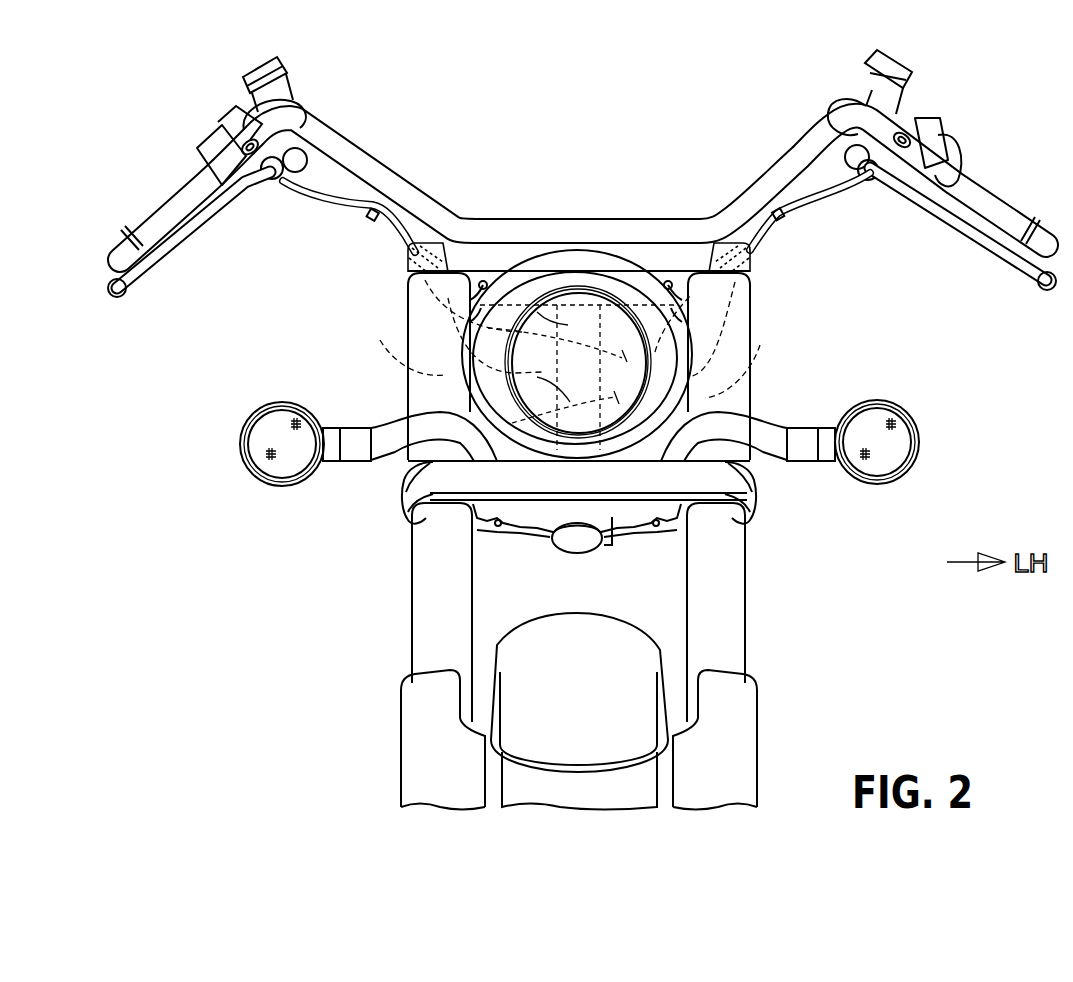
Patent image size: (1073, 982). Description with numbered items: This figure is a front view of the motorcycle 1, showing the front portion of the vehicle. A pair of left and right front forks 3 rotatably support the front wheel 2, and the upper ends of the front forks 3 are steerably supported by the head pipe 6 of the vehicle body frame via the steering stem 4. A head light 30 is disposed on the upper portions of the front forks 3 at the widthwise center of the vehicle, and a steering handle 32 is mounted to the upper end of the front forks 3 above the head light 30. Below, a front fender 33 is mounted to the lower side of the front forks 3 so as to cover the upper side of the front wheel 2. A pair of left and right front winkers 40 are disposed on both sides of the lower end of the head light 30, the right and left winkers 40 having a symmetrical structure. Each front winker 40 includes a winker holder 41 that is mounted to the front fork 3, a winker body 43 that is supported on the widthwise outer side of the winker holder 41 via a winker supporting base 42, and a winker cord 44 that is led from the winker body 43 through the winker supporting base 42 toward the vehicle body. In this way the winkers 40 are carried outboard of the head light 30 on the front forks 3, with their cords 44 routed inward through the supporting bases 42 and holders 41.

The motorcycle 1 is at (630, 182).
The front wheel 2 is at (528, 788).
The front fork 3 is at (408, 332).
The steering stem 4 is at (750, 265).
The head pipe 6 is at (524, 300).
The head light 30 is at (573, 252).
The steering handle 32 is at (687, 219).
The front fender 33 is at (630, 628).
The front winker 40 is at (240, 430).
The winker holder 41 is at (397, 428).
The winker supporting base 42 is at (333, 428).
The winker body 43 is at (272, 404).
The winker cord 44 is at (422, 378).